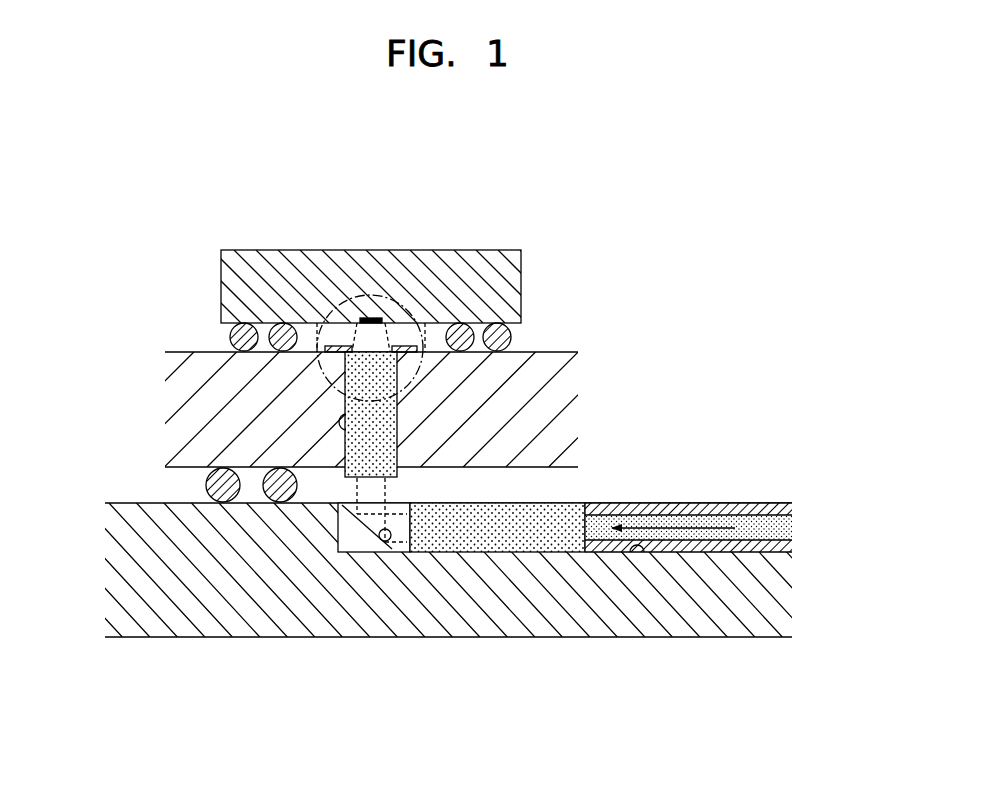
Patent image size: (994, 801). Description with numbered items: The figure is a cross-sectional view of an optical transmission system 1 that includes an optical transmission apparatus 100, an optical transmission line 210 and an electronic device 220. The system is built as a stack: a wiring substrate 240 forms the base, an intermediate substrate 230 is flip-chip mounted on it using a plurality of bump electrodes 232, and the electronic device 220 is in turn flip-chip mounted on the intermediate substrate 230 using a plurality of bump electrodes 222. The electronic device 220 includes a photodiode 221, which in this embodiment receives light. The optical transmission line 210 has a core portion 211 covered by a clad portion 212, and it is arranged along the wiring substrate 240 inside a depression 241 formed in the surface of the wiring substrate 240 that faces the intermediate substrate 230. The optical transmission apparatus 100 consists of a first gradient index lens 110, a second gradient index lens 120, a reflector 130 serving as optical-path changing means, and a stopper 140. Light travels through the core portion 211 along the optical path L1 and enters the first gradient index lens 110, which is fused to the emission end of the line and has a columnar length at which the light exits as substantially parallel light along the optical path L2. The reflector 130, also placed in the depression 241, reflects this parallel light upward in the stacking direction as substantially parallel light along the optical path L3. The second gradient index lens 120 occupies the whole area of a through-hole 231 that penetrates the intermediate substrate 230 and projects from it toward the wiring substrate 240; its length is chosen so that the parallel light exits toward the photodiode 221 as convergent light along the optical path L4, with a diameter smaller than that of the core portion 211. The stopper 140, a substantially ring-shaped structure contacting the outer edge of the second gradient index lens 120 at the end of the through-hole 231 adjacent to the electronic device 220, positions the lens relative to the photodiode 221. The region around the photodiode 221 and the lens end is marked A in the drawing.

The optical transmission system 1 is at (146, 211).
The optical transmission apparatus 100 is at (352, 540).
The first gradient index lens 110 is at (554, 506).
The second gradient index lens 120 is at (398, 423).
The reflector 130 is at (392, 553).
The stopper 140 is at (406, 346).
The optical transmission line 210 is at (732, 478).
The core portion 211 is at (792, 528).
The clad portion 212 is at (792, 509).
The electronic device 220 is at (522, 263).
The photodiode 221 is at (366, 316).
The bump electrodes 222 is at (511, 337).
The intermediate substrate 230 is at (563, 384).
The through-hole 231 is at (340, 428).
The bump electrodes 232 is at (205, 485).
The wiring substrate 240 is at (108, 545).
The depression 241 is at (637, 554).
The region A is at (400, 298).
The optical path L1 is at (692, 527).
The optical path L2 is at (402, 504).
The optical path L3 is at (355, 490).
The optical path L4 is at (355, 340).